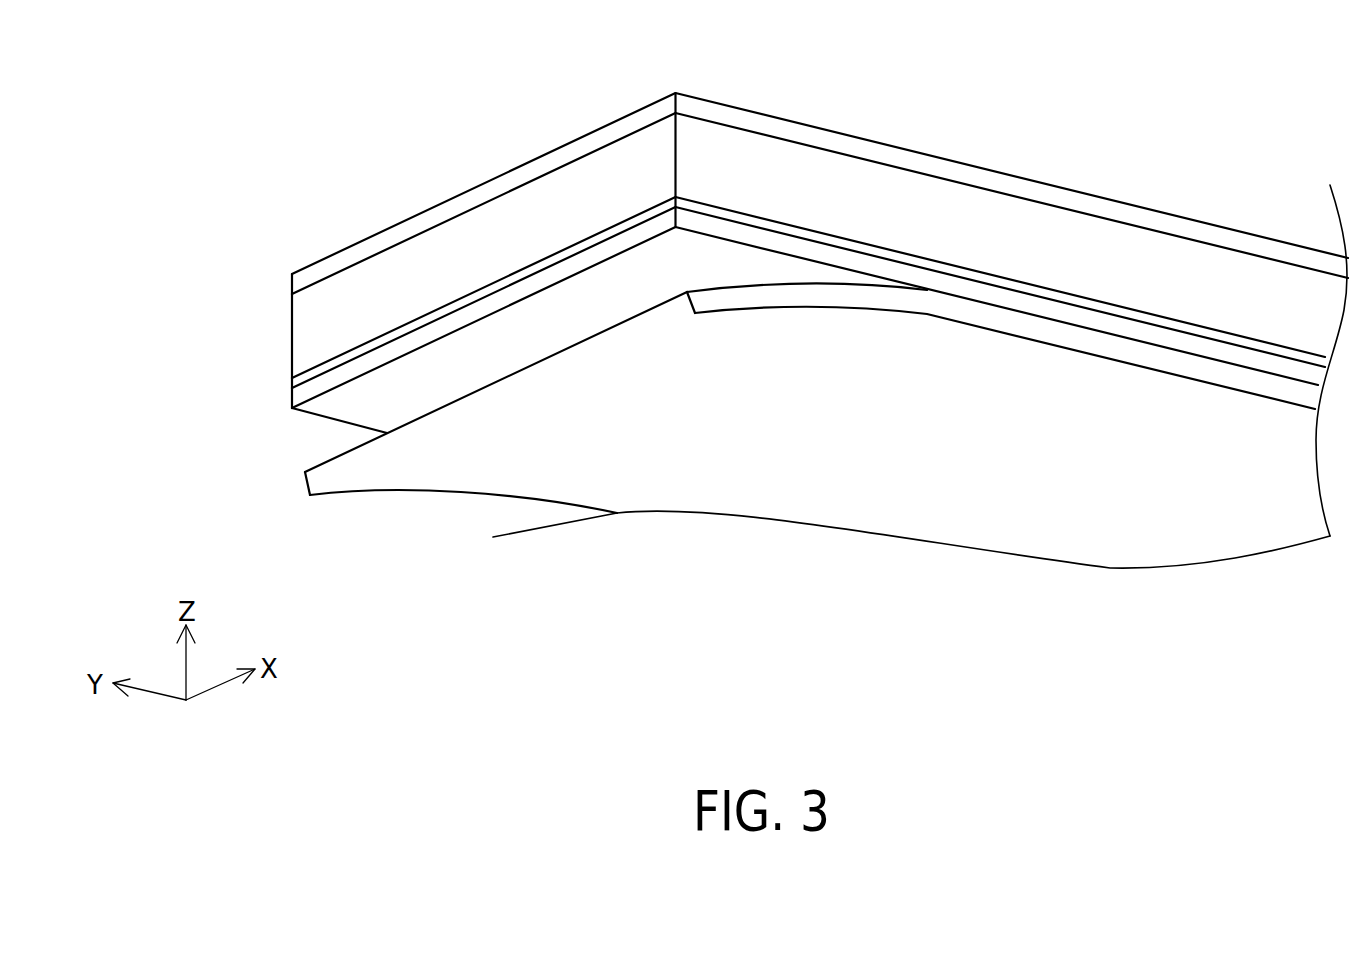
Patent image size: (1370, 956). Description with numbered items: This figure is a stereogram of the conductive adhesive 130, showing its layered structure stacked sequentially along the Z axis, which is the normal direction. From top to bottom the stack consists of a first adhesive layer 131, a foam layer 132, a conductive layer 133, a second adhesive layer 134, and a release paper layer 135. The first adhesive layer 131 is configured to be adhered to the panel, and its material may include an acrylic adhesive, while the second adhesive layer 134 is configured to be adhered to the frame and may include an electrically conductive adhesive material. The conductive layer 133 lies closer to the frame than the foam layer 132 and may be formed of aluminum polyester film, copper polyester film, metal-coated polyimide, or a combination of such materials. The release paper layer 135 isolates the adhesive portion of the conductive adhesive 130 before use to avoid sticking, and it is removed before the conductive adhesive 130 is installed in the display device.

The conductive adhesive 130 is at (275, 70).
The first adhesive layer 131 is at (337, 265).
The foam layer 132 is at (338, 318).
The conductive layer 133 is at (340, 360).
The second adhesive layer 134 is at (373, 393).
The release paper layer 135 is at (335, 472).